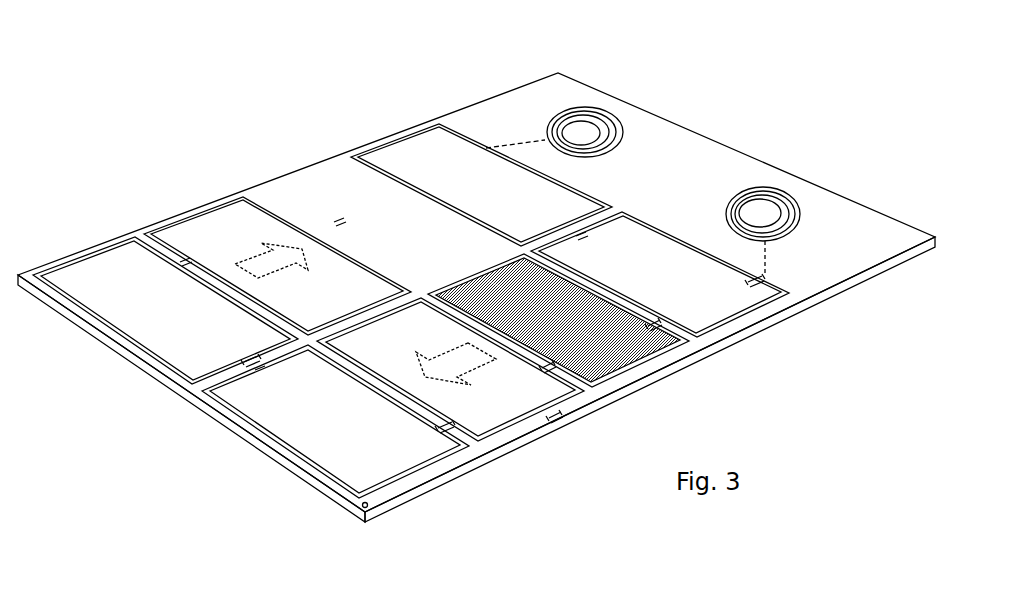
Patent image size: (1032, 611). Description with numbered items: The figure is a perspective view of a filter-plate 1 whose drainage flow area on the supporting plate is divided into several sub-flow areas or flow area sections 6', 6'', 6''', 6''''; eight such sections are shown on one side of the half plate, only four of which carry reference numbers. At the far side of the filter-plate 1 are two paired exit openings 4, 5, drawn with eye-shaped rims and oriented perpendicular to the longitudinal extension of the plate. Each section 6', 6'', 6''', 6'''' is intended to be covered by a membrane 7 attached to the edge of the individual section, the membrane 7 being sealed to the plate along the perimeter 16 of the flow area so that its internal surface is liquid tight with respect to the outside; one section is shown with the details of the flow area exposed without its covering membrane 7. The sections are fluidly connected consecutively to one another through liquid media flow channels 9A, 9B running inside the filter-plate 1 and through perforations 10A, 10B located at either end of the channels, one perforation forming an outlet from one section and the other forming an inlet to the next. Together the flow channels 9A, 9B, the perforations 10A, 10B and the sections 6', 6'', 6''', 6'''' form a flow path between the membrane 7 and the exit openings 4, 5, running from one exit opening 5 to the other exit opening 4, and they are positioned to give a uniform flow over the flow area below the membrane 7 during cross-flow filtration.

The filter-plate 1 is at (284, 140).
The exit opening 4 is at (622, 117).
The exit opening 5 is at (795, 200).
The sub-flow area / flow area section 6' is at (660, 292).
The sub-flow area / flow area section 6'' is at (587, 324).
The sub-flow area / flow area section 6''' is at (462, 389).
The sub-flow area / flow area section 6'''' is at (335, 429).
The membrane 7 is at (757, 305).
The flow channel 9A is at (762, 275).
The flow channel 9B is at (498, 143).
The perforation 10A is at (620, 310).
The perforation 10B is at (537, 342).
The perimeter 16 is at (553, 277).